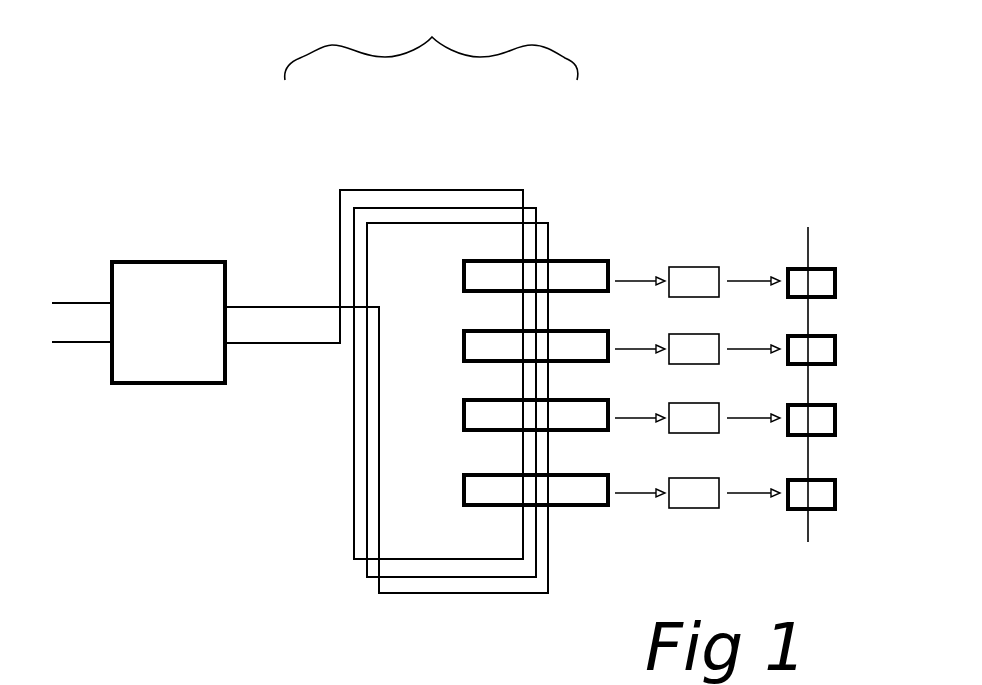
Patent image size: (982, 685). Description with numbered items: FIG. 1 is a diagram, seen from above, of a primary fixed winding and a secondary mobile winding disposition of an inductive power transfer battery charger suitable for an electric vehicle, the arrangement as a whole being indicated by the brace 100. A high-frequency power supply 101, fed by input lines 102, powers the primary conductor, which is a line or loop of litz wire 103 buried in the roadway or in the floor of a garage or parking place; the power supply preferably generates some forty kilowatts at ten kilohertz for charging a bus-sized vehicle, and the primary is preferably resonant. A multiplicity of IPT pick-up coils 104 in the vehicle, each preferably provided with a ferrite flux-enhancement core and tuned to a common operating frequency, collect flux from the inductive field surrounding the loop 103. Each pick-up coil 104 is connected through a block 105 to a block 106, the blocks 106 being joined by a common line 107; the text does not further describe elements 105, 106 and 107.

The signal processing arrangement 100 is at (431, 42).
The high-frequency power supply 101 is at (203, 260).
The input lines 102 is at (70, 343).
The loop of litz wire 103 is at (341, 270).
The IPT pick-up coils 104 is at (612, 259).
The processing units 105 is at (729, 268).
The output units 106 is at (808, 245).
The common bus line 107 is at (808, 530).